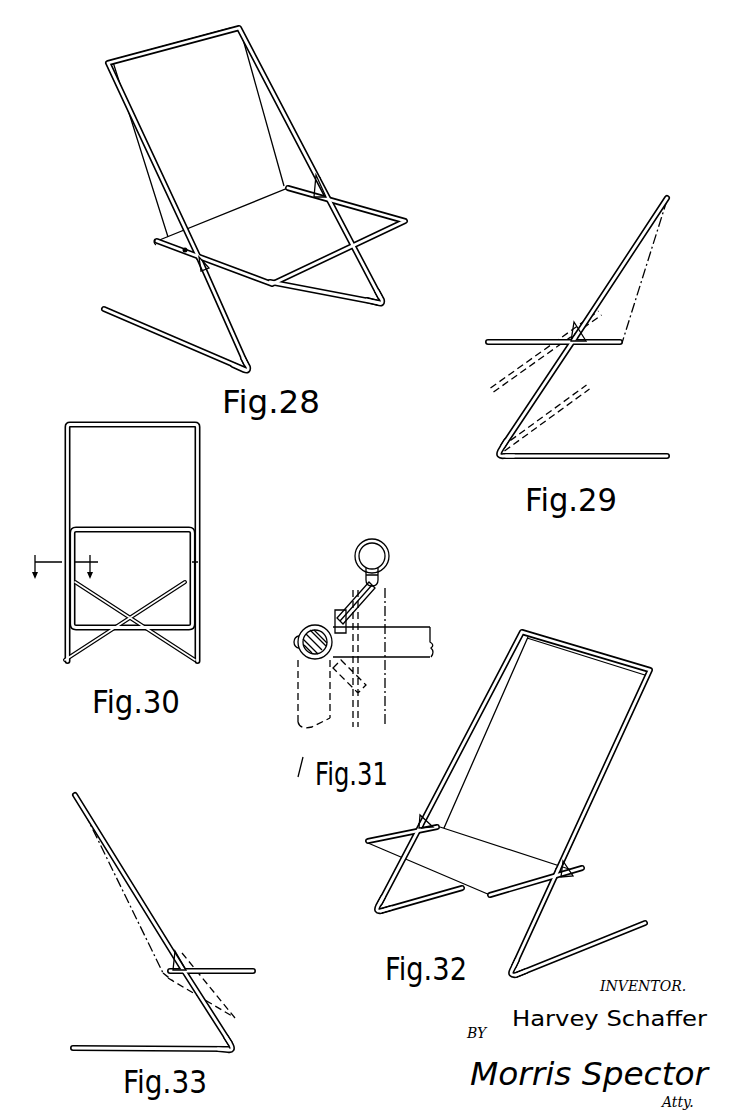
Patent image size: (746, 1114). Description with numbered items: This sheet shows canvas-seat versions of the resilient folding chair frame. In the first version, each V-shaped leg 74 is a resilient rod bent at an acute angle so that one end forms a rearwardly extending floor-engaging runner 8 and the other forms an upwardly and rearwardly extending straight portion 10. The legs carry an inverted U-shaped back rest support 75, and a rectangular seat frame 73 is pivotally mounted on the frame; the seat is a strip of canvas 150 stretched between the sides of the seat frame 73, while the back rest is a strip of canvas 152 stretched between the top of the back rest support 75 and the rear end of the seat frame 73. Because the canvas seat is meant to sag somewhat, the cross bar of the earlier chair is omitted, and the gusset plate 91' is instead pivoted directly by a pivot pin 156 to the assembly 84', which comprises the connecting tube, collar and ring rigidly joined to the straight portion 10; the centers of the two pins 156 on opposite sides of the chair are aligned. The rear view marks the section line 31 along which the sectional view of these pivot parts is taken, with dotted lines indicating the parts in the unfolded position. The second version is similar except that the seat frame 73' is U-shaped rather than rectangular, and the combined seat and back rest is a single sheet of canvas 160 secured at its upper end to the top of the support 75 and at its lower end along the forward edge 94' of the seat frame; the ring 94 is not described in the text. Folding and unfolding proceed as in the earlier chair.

In FIG. 28, the floor-engaging runner 8 is at (150, 333).
In FIG. 29, the floor-engaging runner 8 is at (617, 453).
In FIG. 32, the floor-engaging runner 8 is at (605, 942).
In FIG. 33, the floor-engaging runner 8 is at (103, 1043).
In FIG. 28, the straight portion 10 is at (237, 333).
In FIG. 29, the straight portion 10 is at (550, 372).
In FIG. 32, the straight portion 10 is at (520, 942).
In FIG. 30, the section line 31— 31 is at (113, 558).
In FIG. 28, the rectangular seat frame 73 is at (297, 236).
In FIG. 30, the rectangular seat frame 73 is at (133, 561).
In FIG. 32, the U-shaped seat frame 73' is at (462, 851).
In FIG. 33, the U-shaped seat frame 73' is at (225, 959).
In FIG. 28, the V-shaped leg 74 is at (213, 298).
In FIG. 29, the V-shaped leg 74 is at (517, 415).
In FIG. 32, the V-shaped leg 74 is at (535, 923).
In FIG. 28, the back rest support 75 is at (107, 63).
In FIG. 30, the back rest support 75 is at (65, 457).
In FIG. 32, the back rest support 75 is at (642, 715).
In FIG. 33, the back rest support 75 is at (135, 887).
In FIG. 28, the connecting tube assembly 84' is at (250, 228).
In FIG. 31, the connecting tube assembly 84' is at (307, 632).
In FIG. 31, the gusset plate 91' is at (347, 603).
In FIG. 28, the ring 94 is at (160, 247).
In FIG. 31, the ring 94 is at (386, 554).
In FIG. 32, the seat frame forward edge 94' is at (496, 865).
In FIG. 28, the canvas seat strip 150 is at (347, 218).
In FIG. 28, the canvas back rest strip 152 is at (258, 165).
In FIG. 29, the canvas back rest strip 152 is at (637, 300).
In FIG. 31, the pivot pin 156 is at (293, 642).
In FIG. 32, the single sheet of canvas 160 is at (583, 775).
In FIG. 33, the single sheet of canvas 160 is at (135, 915).